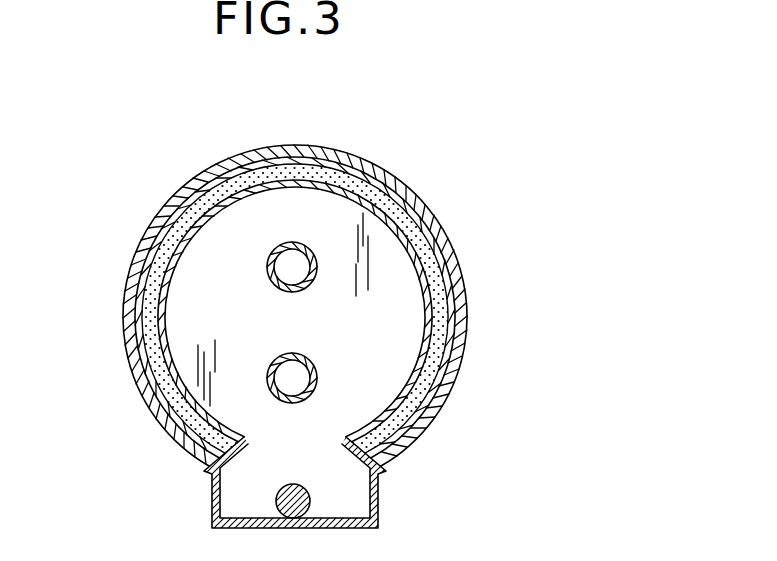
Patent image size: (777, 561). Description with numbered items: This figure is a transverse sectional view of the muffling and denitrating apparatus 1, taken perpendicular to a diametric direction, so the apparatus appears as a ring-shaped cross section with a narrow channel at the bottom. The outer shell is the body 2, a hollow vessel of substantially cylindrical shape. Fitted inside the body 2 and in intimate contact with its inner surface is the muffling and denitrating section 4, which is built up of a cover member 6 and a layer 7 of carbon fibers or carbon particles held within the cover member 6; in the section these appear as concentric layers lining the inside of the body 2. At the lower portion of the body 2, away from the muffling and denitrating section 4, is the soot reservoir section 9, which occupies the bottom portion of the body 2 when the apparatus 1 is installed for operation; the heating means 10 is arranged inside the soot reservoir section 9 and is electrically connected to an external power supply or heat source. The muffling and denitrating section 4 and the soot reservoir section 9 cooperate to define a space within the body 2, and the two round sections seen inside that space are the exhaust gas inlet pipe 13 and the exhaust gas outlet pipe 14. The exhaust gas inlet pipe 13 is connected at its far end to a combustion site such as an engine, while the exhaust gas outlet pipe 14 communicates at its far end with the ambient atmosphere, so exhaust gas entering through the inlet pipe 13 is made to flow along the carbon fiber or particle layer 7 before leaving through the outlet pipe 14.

The muffling and denitrating apparatus 1 is at (276, 320).
The body 2 is at (467, 303).
The muffling and denitrating section 4 is at (98, 505).
The cover member 6 is at (178, 444).
The layer of carbon fibers or carbon particles 7 is at (143, 399).
The soot reservoir section 9 is at (236, 498).
The heating means 10 is at (312, 500).
The exhaust gas inlet pipe 13 is at (267, 270).
The exhaust gas outlet pipe 14 is at (318, 386).